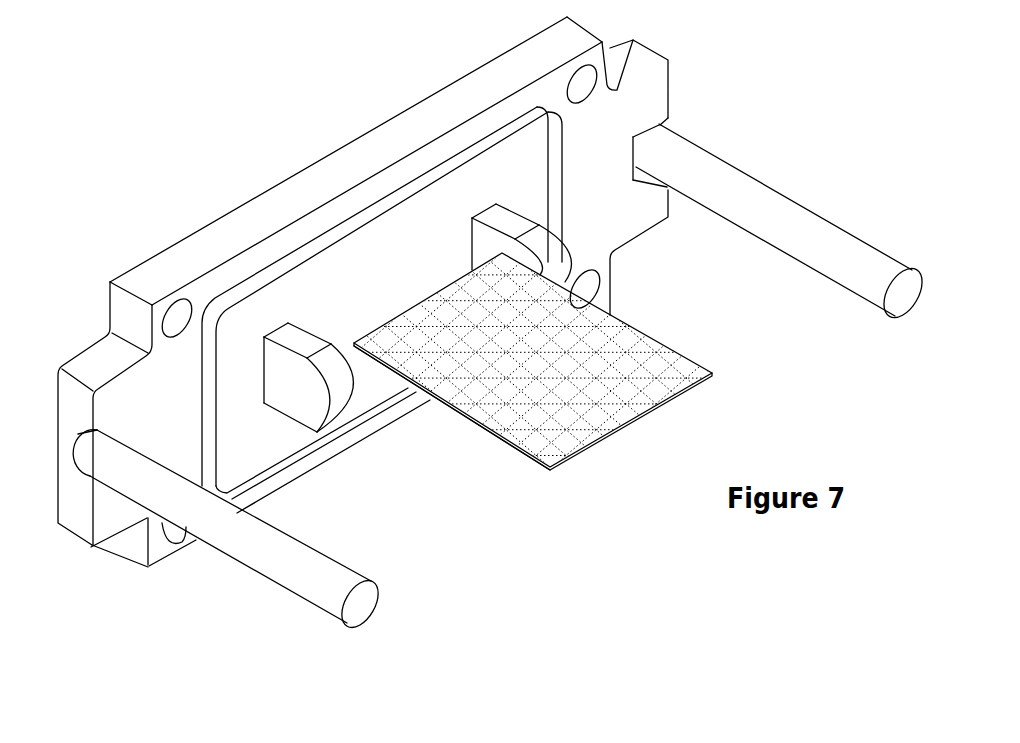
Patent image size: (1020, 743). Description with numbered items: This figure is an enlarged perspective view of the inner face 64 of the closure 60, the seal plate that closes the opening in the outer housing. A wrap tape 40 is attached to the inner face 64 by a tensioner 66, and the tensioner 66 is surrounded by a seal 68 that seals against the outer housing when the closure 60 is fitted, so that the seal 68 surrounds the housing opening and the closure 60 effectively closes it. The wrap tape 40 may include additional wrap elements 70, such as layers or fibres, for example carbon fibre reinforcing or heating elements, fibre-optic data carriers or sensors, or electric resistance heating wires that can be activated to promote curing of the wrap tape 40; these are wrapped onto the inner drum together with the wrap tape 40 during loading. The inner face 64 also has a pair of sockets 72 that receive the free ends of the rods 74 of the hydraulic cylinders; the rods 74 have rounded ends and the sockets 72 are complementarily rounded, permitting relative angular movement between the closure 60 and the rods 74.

The wrap tape 40 is at (653, 350).
The closure 60 is at (150, 185).
The inner face 64 is at (642, 112).
The tensioner 66 is at (493, 243).
The seal 68 is at (278, 263).
The additional wrap elements 70 is at (557, 420).
The sockets 72 is at (660, 126).
The rods 74 is at (855, 278).